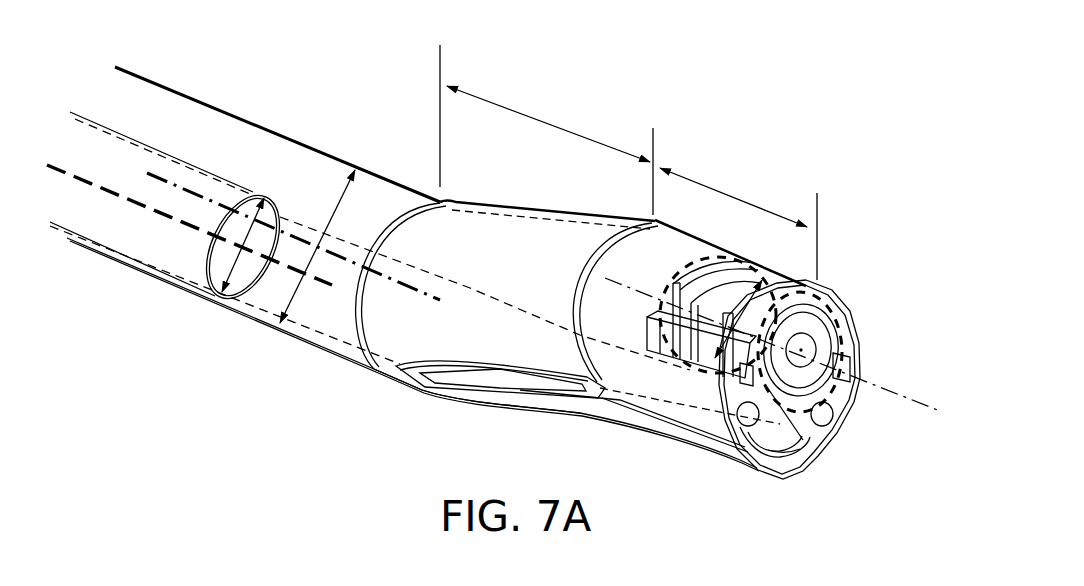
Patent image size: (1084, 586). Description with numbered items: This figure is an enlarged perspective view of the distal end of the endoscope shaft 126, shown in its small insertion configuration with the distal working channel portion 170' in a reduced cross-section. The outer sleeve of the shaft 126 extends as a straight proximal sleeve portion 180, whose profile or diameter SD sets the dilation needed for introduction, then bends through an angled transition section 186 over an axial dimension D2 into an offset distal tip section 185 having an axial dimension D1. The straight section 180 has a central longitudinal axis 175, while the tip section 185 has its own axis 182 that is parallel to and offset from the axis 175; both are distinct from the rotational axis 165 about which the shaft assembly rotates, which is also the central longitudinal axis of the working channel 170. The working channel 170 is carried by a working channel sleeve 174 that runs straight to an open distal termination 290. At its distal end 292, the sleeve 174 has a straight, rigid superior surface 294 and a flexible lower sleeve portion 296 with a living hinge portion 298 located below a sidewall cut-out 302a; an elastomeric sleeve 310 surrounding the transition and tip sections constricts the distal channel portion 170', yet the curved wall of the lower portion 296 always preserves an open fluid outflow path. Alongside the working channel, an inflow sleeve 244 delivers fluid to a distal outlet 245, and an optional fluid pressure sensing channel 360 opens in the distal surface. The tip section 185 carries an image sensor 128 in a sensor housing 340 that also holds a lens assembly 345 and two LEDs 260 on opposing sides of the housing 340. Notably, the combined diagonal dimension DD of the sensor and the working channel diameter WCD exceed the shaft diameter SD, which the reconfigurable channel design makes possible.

The endoscope shaft 126 is at (341, 63).
The image sensor 128 is at (707, 367).
The rotational axis 165 is at (188, 226).
The working channel 170 is at (225, 259).
The distal working channel portion 170' is at (807, 473).
The working channel sleeve 174 is at (160, 152).
The central longitudinal axis of outer sleeve 175 is at (423, 290).
The straight proximal sleeve portion 180 is at (300, 143).
The axis of distal tip section 182 is at (887, 381).
The offset distal tip section 185 is at (697, 238).
The transition section 186 is at (553, 220).
The inflow sleeve 244 is at (557, 361).
The distal outlet 245 is at (777, 457).
The LEDs 260 is at (753, 372).
The open distal termination 290 is at (780, 460).
The distal end of sleeve 292 is at (618, 403).
The superior surface 294 is at (827, 443).
The lower sleeve portion 296 is at (712, 443).
The living hinge portion 298 is at (493, 390).
The sidewall cut-out 302a is at (600, 390).
The elastomeric sleeve 310 is at (817, 452).
The sensor housing 340 is at (663, 290).
The lens assembly 345 is at (817, 330).
The fluid pressure sensing channel 360 is at (822, 416).
The axial dimension of distal tip section D1 is at (733, 197).
The axial dimension of transition section D2 is at (548, 124).
The diagonal dimension of sensor DD is at (735, 340).
The shaft diameter SD is at (322, 220).
The working channel diameter WCD is at (242, 258).